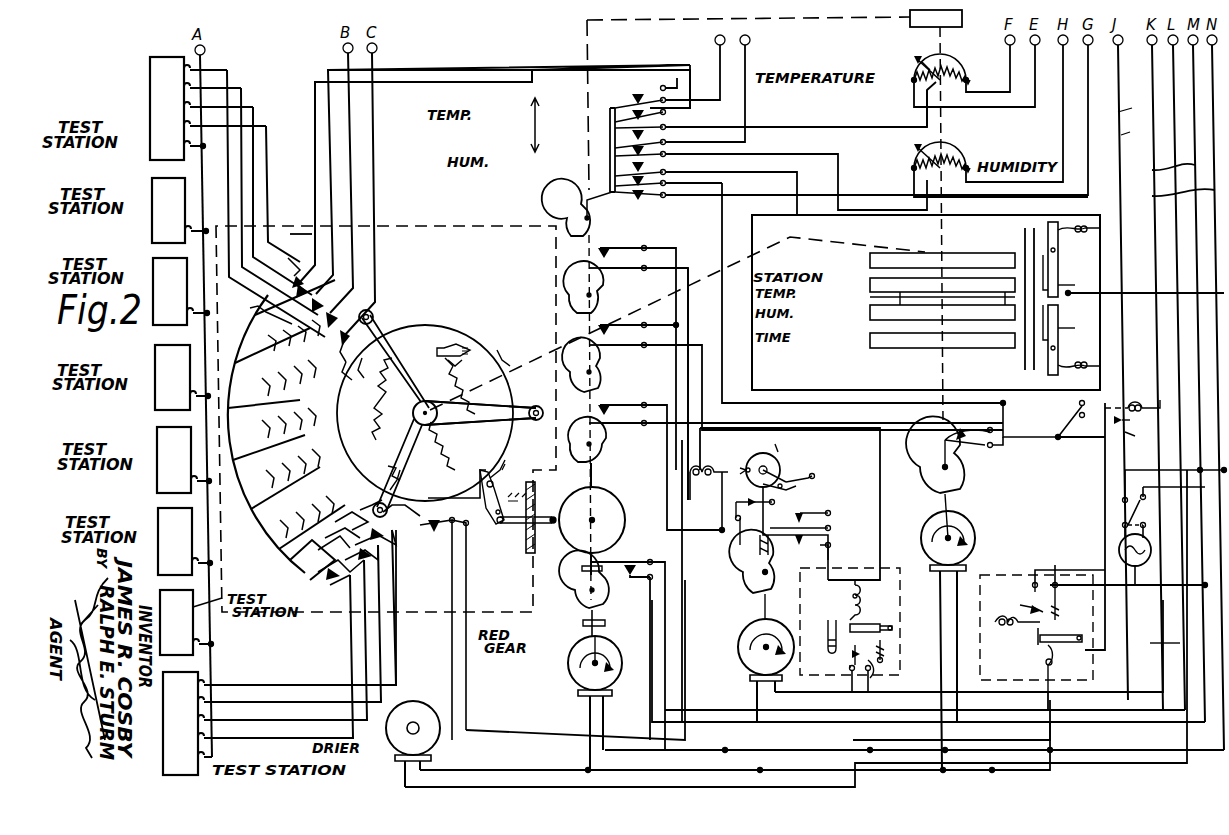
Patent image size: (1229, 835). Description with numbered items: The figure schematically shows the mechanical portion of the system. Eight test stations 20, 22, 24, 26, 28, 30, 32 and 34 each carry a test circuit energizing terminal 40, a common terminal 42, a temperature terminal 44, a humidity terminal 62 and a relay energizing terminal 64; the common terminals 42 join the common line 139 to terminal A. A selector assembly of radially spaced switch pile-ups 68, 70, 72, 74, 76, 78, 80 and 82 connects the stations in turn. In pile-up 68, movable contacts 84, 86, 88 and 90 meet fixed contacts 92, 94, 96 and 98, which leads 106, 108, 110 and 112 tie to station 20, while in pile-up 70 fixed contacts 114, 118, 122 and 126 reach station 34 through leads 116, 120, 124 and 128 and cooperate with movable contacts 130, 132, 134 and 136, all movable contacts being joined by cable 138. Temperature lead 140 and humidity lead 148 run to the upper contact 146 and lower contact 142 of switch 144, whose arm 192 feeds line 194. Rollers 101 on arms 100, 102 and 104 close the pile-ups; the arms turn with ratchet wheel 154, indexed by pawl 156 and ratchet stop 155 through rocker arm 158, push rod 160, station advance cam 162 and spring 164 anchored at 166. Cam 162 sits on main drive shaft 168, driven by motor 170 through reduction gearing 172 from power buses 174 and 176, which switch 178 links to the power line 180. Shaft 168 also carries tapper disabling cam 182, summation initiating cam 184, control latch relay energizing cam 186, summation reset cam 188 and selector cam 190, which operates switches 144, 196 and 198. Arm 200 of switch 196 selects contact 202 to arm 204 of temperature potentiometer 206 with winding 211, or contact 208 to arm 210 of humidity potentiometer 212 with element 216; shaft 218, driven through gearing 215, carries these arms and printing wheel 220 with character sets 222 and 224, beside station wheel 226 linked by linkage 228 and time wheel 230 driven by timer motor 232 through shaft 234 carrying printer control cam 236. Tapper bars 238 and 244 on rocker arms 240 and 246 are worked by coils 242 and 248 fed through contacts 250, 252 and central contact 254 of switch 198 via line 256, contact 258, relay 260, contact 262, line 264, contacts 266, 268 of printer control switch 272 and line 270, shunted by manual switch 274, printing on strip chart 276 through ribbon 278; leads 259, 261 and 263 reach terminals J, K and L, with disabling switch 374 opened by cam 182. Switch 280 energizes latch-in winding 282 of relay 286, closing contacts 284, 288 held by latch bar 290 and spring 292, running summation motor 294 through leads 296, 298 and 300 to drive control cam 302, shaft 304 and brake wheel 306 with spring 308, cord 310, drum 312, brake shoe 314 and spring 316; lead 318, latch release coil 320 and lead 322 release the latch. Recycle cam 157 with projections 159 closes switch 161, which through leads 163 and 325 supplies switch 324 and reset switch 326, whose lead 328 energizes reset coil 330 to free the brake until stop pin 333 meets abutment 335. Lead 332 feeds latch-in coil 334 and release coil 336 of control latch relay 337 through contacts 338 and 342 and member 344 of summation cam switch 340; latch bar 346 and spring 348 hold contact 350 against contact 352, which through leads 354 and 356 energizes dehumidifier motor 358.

The test station 20 is at (191, 799).
The test station 22 is at (186, 613).
The test station 24 is at (184, 532).
The test station 26 is at (183, 451).
The test station 28 is at (181, 368).
The test station 30 is at (179, 282).
The test station 32 is at (178, 201).
The test station 34 is at (140, 115).
The test circuit energizing terminal 40 is at (198, 396).
The common terminal 42 is at (185, 451).
The temperature terminal 44 is at (211, 433).
The humidity terminal 62 is at (204, 414).
The relay energizing terminal 64 is at (191, 378).
The switch pile-up assembly 68 is at (321, 604).
The switch pile-up assembly 70 is at (302, 249).
The switch pile-up 72 is at (308, 559).
The switch pile-up 74 is at (276, 522).
The switch pile-up 76 is at (256, 477).
The switch pile-up 78 is at (252, 432).
The switch pile-up 80 is at (254, 385).
The switch pile-up 82 is at (264, 350).
The movable leaf-spring contact 84 is at (328, 574).
The movable leaf-spring contact 86 is at (342, 535).
The movable leaf-spring contact 88 is at (354, 519).
The movable leaf-spring contact 90 is at (372, 508).
The fixed contact 92 is at (340, 589).
The fixed contact 94 is at (375, 536).
The fixed contact 96 is at (366, 554).
The fixed contact 98 is at (392, 522).
The switch actuating arm 100 is at (400, 470).
The roller 101 is at (374, 315).
The switch actuating arm 102 is at (398, 346).
The switch actuating arm 104 is at (480, 430).
The lead 106 is at (274, 748).
The lead 108 is at (276, 730).
The lead 110 is at (278, 712).
The lead 112 is at (282, 700).
The fixed contact 114 is at (290, 262).
The lead 116 is at (262, 198).
The fixed contact 118 is at (250, 306).
The lead 120 is at (262, 179).
The fixed contact 122 is at (337, 372).
The lead 124 is at (260, 160).
The fixed contact 126 is at (346, 354).
The lead 128 is at (258, 141).
The movable contact 130 is at (302, 278).
The movable contact 132 is at (322, 300).
The movable contact 134 is at (340, 312).
The movable contact 136 is at (345, 338).
The inter-connecting cable 138 is at (265, 542).
The common line 139 is at (222, 643).
The temperature lead 140 is at (470, 82).
The lower fixed contact 142 is at (640, 120).
The single-pole double-throw switch 144 is at (620, 106).
The upper contact 146 is at (660, 88).
The humidity lead 148 is at (528, 119).
The ratchet wheel 154 is at (462, 372).
The ratchet stop 155 is at (460, 346).
The pawl 156 is at (448, 492).
The recycle cam disc 157 is at (445, 326).
The rocker arm 158 is at (518, 468).
The projection 159 is at (450, 420).
The push rod 160 is at (500, 528).
The cam switch 161 is at (440, 548).
The station advance cam 162 is at (623, 500).
The lead 163 is at (452, 650).
The spring 164 is at (508, 484).
The fixed portion of the machine 166 is at (526, 553).
The main drive shaft 168 is at (585, 152).
The main drive motor 170 is at (568, 676).
The reduction gearing unit 172 is at (580, 622).
The power bus line 174 is at (892, 780).
The power bus line 176 is at (810, 750).
The switch 178 is at (1120, 514).
The commercial power line circuit 180 is at (1138, 566).
The tapper circuit disabling cam 182 is at (574, 590).
The summation initiating cam 184 is at (606, 446).
The control latch relay energizing cam 186 is at (606, 378).
The summation reset cam 188 is at (604, 294).
The temperature/humidity selector cam 190 is at (566, 204).
The movable arm 192 is at (635, 90).
The line 194 is at (700, 100).
The sweep potentiometer selector switch 196 is at (628, 142).
The tapper circuit selector switch 198 is at (628, 183).
The central contact arm 200 is at (676, 140).
The upper contact 202 is at (676, 124).
The rotatable arm 204 is at (910, 84).
The temperature sweep potentiometer 206 is at (996, 61).
The lower contact 208 is at (676, 168).
The movable arm 210 is at (910, 172).
The active resistance winding 211 is at (900, 72).
The humidity sweep potentiometer 212 is at (1002, 155).
The step-up transmission gearing unit 215 is at (908, 20).
The active resistance element 216 is at (906, 158).
The shaft 218 is at (945, 122).
The printing wheel 220 is at (868, 297).
The character set 222 is at (868, 287).
The character set 224 is at (868, 313).
The station printer wheel 226 is at (868, 262).
The mechanical linkage 228 is at (522, 360).
The printer wheel 230 is at (868, 342).
The timer motor 232 is at (975, 530).
The timer shaft 234 is at (946, 376).
The printer control cam 236 is at (926, 452).
The tapper bar 238 is at (1081, 284).
The rocker arm 240 is at (1060, 268).
The relay coil 242 is at (1075, 238).
The tapper bar 244 is at (1060, 312).
The rocker arm 246 is at (1081, 328).
The relay coil 248 is at (1085, 362).
The upper contact 250 is at (640, 168).
The lower terminal 252 is at (670, 198).
The movable central contact 254 is at (636, 194).
The line 256 is at (1139, 443).
The fixed contact 258 is at (1136, 423).
The lead 259 is at (1136, 103).
The tapper control relay 260 is at (1148, 396).
The lead 261 is at (1182, 668).
The movable contact 262 is at (1082, 420).
The lead 263 is at (1150, 641).
The line 264 is at (1072, 440).
The movable contact 266 is at (990, 462).
The fixed contact 268 is at (940, 432).
The line 270 is at (720, 240).
The printer control switch 272 is at (992, 446).
The manually operable switch 274 is at (1054, 422).
The strip chart 276 is at (1022, 228).
The inked band or carbon ribbon 278 is at (1030, 243).
The summation initiating switch assembly 280 is at (644, 400).
The summation latch-in relay winding 282 is at (1010, 632).
The movable contact 284 is at (1018, 607).
The summation latch relay 286 is at (1000, 575).
The fixed contact 288 is at (1030, 595).
The latch bar 290 is at (1036, 642).
The spring 292 is at (1066, 600).
The summation motor 294 is at (748, 626).
The lead 296 is at (748, 698).
The lead 298 is at (780, 692).
The lead 300 is at (1146, 597).
The control cam 302 is at (756, 582).
The shaft 304 is at (782, 607).
The brake wheel 306 is at (752, 440).
The spring 308 is at (806, 467).
The cord 310 is at (785, 462).
The drum 312 is at (785, 439).
The brake shoe 314 is at (742, 464).
The spring 316 is at (743, 523).
The lead 318 is at (1103, 490).
The latch release coil 320 is at (1058, 663).
The lead 322 is at (1056, 694).
The control relay energizing switch 324 is at (644, 362).
The lead 325 is at (470, 717).
The summation reset switch 326 is at (644, 245).
The lead 328 is at (690, 312).
The summation reset relay coil 330 is at (705, 498).
The lead 332 is at (858, 428).
The stop pin 333 is at (769, 501).
The control latch-in relay coil 334 is at (825, 631).
The reference abutment 335 is at (792, 492).
The control latch release relay coil 336 is at (845, 600).
The control latch relay 337 is at (880, 560).
The upper fixed terminal 338 is at (838, 504).
The summation cam switch 340 is at (794, 525).
The lower fixed contact 342 is at (840, 535).
The movable member 344 is at (758, 548).
The latch bar 346 is at (882, 622).
The tension spring 348 is at (886, 656).
The movable contact 350 is at (886, 676).
The fixed contact 352 is at (848, 660).
The lead 354 is at (868, 738).
The lead 356 is at (392, 780).
The dehumidifier motor 358 is at (413, 701).
The tapper circuit disabling switch 374 is at (648, 555).